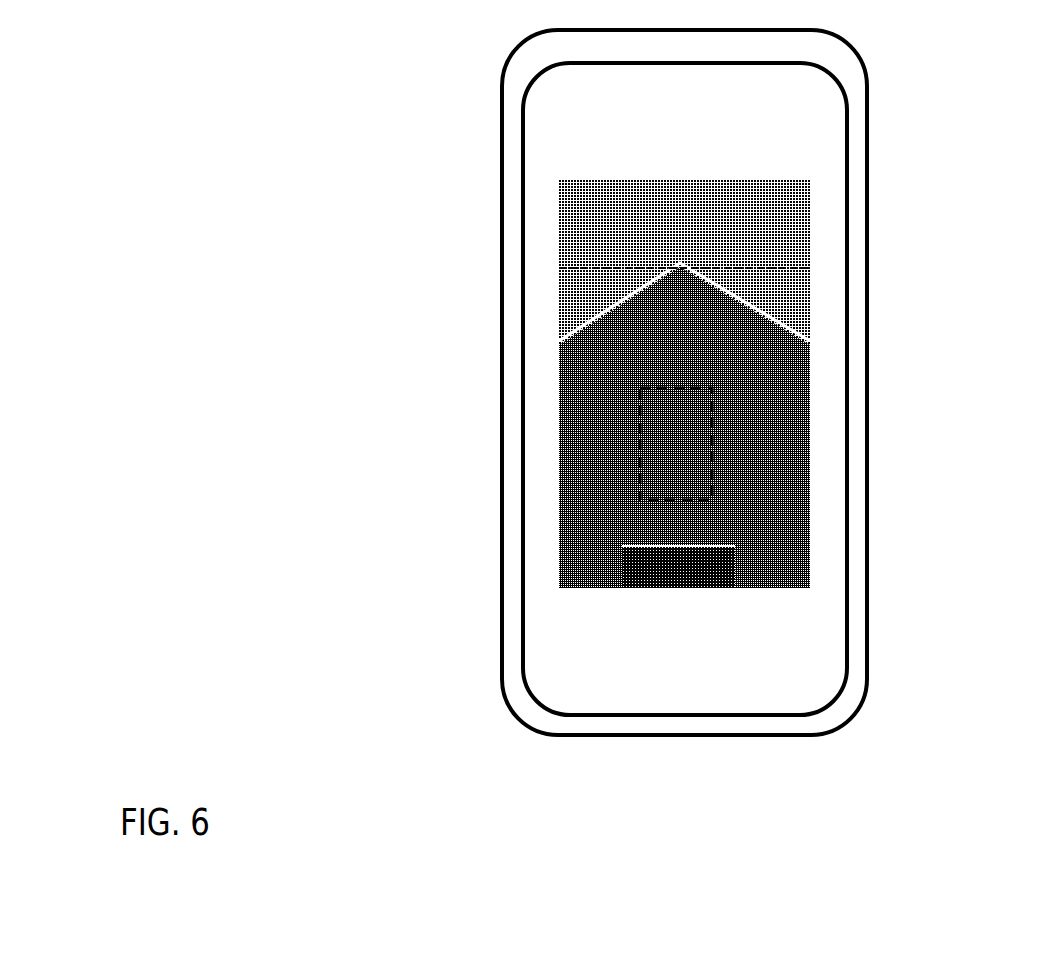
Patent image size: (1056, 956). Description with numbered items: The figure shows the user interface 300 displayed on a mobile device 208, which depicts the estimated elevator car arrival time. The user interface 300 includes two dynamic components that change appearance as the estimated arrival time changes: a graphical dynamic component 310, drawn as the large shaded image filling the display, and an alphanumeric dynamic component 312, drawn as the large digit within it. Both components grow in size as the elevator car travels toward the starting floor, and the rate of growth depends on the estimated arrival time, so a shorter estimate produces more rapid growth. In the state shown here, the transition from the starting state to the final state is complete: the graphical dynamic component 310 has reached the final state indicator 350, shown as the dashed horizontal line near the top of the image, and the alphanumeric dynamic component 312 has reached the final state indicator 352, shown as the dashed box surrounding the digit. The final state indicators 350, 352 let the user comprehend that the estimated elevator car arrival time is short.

The mobile device 208 is at (808, 63).
The user interface 300 is at (522, 193).
The graphical dynamic component 310 is at (778, 470).
The alphanumeric dynamic component 312 is at (697, 440).
The final state indicator 350 is at (797, 268).
The final state indicator 352 is at (640, 460).